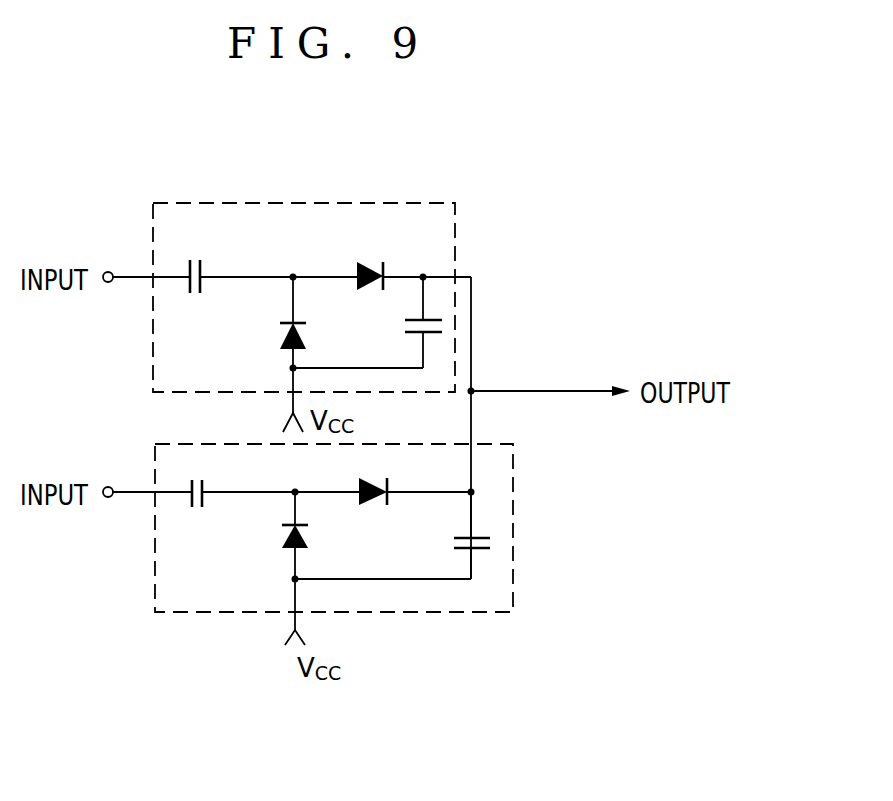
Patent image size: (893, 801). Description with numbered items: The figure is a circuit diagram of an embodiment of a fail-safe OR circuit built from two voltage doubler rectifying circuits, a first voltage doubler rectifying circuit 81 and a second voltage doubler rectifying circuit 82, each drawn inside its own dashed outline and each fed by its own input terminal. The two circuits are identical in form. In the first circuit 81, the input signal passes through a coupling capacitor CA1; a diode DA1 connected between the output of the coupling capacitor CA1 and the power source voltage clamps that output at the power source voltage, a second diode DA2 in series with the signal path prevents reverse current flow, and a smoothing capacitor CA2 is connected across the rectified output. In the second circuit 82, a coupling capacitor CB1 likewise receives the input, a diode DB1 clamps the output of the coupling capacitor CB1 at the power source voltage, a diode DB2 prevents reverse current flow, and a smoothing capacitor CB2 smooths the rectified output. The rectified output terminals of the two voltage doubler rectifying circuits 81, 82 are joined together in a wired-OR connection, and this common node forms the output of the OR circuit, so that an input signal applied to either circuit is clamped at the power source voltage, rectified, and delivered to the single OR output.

The first voltage doubler rectifying circuit 81 is at (455, 250).
The second voltage doubler rectifying circuit 82 is at (513, 505).
The coupling capacitor CA1 is at (205, 266).
The smoothing capacitor CA2 is at (405, 326).
The clamping diode DA1 is at (278, 334).
The reverse current preventing diode DA2 is at (378, 262).
The coupling capacitor CB1 is at (196, 512).
The smoothing capacitor CB2 is at (452, 546).
The clamping diode DB1 is at (280, 540).
The reverse current preventing diode DB2 is at (372, 506).